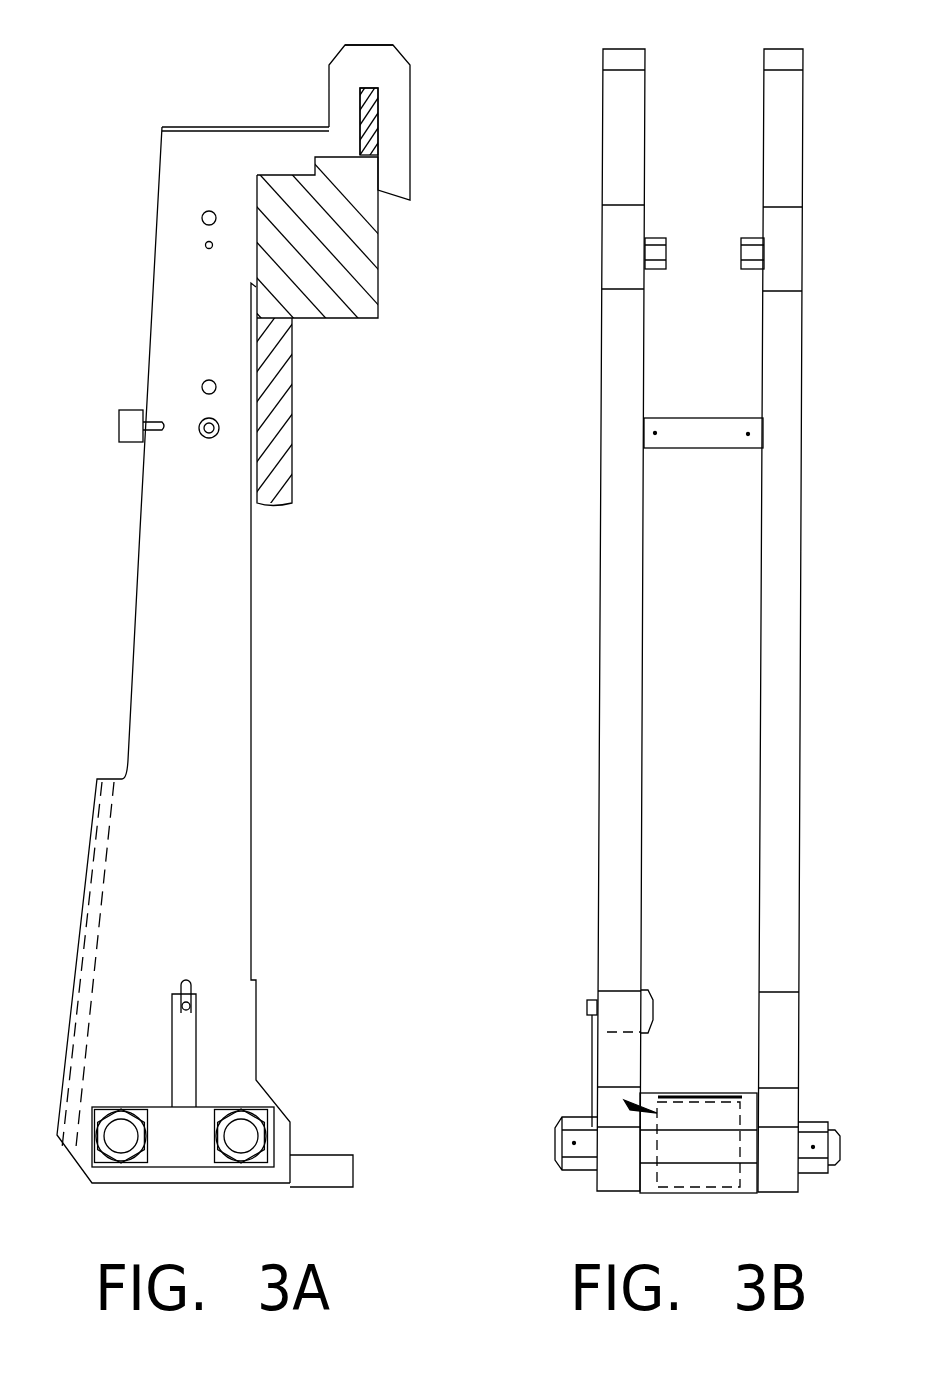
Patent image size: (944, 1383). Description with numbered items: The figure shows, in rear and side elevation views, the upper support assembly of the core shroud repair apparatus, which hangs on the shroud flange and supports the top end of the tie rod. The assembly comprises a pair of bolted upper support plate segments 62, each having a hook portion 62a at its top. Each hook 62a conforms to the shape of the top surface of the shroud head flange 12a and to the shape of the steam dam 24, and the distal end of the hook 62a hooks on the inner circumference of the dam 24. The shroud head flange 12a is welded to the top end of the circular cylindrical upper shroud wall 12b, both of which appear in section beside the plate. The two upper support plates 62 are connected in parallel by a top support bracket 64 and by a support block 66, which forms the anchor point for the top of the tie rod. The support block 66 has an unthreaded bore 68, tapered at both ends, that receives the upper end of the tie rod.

In FIG. 3A, the upper support plate segments 62 is at (150, 303).
In FIG. 3B, the upper support plate segments 62 is at (775, 783).
In FIG. 3A, the hook portion 62a is at (372, 43).
In FIG. 3A, the steam dam 24 is at (372, 121).
In FIG. 3A, the shroud head flange 12a is at (345, 248).
In FIG. 3A, the upper shroud wall 12b is at (295, 420).
In FIG. 3B, the top support bracket 64 is at (678, 428).
In FIG. 3A, the support block 66 is at (331, 1157).
In FIG. 3B, the support block 66 is at (745, 1193).
In FIG. 3B, the unthreaded bore 68 is at (620, 1102).